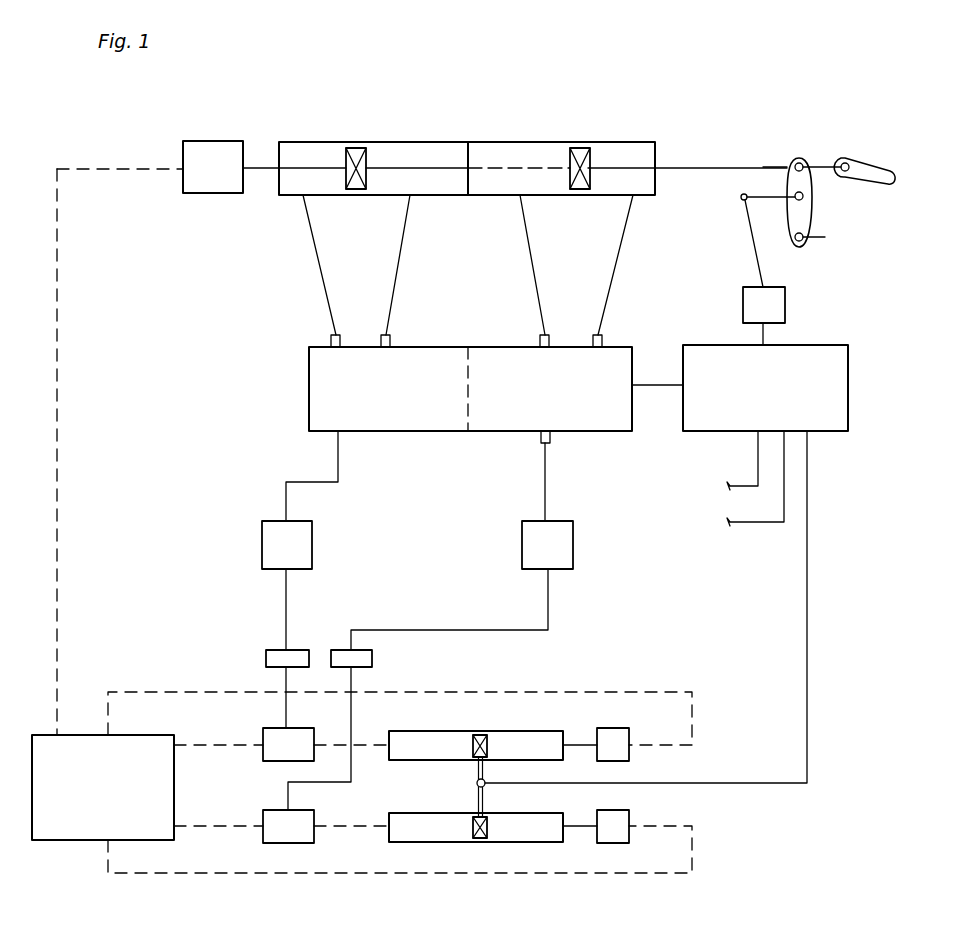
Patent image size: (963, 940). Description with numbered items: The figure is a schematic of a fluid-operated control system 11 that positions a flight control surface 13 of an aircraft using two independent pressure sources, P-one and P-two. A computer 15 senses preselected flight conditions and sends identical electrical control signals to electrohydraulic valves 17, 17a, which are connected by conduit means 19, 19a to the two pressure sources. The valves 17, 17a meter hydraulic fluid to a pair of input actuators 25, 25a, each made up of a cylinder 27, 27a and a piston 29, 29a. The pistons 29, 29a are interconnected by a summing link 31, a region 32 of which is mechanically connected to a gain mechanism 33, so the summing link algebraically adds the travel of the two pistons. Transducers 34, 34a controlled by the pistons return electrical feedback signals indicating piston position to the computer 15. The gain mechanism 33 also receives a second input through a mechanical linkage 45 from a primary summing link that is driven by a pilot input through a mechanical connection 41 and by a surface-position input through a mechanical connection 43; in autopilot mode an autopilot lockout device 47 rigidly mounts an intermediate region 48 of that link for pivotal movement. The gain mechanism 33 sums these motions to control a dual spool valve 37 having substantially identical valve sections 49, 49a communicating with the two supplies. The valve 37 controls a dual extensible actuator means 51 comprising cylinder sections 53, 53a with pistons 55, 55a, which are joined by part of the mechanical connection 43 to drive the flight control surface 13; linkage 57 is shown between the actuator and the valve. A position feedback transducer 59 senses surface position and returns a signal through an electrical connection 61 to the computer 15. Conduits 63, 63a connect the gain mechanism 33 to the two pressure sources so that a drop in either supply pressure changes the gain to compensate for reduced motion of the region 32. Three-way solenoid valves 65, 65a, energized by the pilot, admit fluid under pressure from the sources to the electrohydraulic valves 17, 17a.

The control system 11 is at (575, 95).
The flight control surface 13 is at (868, 170).
The computer 15 is at (65, 826).
The electrohydraulic valve 17 is at (272, 761).
The electrohydraulic valve 17a is at (270, 843).
The conduit means 19 is at (283, 601).
The conduit means 19a is at (497, 630).
The input actuator 25 is at (440, 730).
The input actuator 25a is at (455, 843).
The cylinder 27 is at (530, 731).
The cylinder 27a is at (450, 813).
The piston 29 is at (508, 722).
The piston 29a is at (490, 830).
The summing link 31 is at (487, 797).
The region of summing link 32 is at (487, 782).
The gain mechanism 33 is at (848, 358).
The transducer 34 is at (618, 728).
The transducer 34a is at (618, 810).
The dual spool valve 37 is at (490, 434).
The mechanical connection 41 is at (820, 237).
The mechanical connection 43 is at (787, 141).
The mechanical linkage 45 is at (755, 254).
The autopilot lockout device 47 is at (775, 307).
The intermediate region of primary summing link 48 is at (811, 200).
The valve section 49 is at (403, 417).
The valve section 49a is at (583, 410).
The actuator means 51 is at (506, 140).
The cylinder section 53 is at (325, 142).
The cylinder section 53a is at (640, 141).
The piston 55 is at (366, 160).
The piston 55a is at (590, 158).
The feedback linkage 57 is at (404, 232).
The position feedback transducer 59 is at (213, 162).
The electrical connection 61 is at (112, 169).
The conduit 63 is at (758, 457).
The conduit 63a is at (783, 498).
The three-way solenoid valve 65 is at (266, 657).
The three-way solenoid valve 65a is at (372, 660).